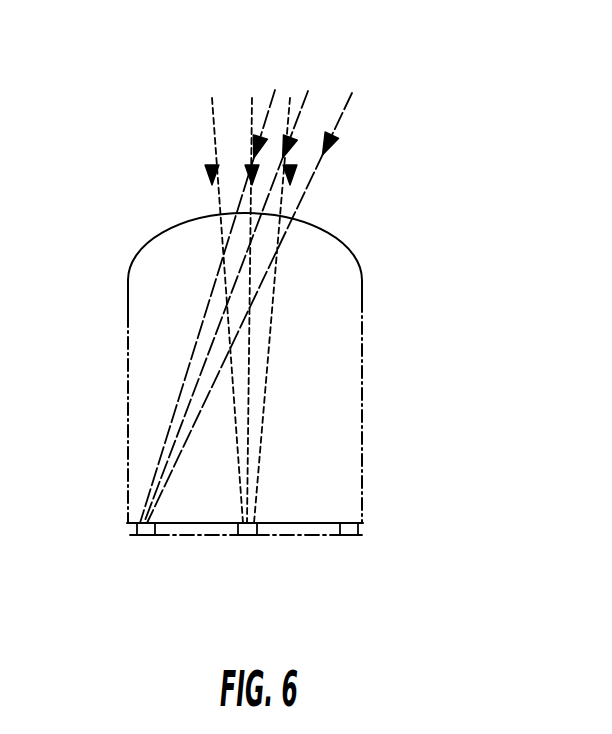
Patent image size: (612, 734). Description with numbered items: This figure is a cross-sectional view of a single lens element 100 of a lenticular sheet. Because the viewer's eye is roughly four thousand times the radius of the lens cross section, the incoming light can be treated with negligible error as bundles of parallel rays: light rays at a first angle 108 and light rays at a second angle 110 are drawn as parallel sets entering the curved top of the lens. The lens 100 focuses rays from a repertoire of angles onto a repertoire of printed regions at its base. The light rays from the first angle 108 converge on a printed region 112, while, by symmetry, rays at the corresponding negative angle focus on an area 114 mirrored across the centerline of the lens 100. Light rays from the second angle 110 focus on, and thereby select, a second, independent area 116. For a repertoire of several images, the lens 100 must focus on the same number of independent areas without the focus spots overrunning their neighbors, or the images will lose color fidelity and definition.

The lens element 100 is at (353, 258).
The light rays at a first angle 108 is at (352, 93).
The light rays at a second angle 110 is at (290, 98).
The printed region 112 is at (145, 536).
The mirrored area 114 is at (247, 536).
The second independent area 116 is at (345, 536).